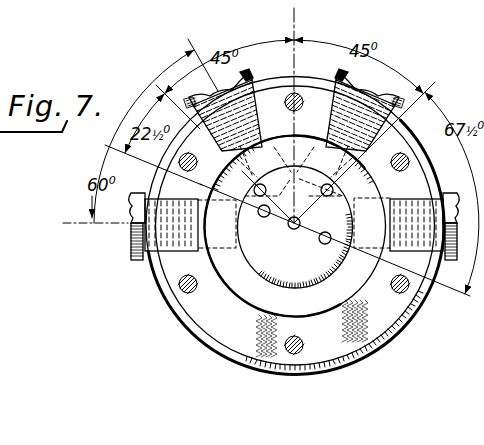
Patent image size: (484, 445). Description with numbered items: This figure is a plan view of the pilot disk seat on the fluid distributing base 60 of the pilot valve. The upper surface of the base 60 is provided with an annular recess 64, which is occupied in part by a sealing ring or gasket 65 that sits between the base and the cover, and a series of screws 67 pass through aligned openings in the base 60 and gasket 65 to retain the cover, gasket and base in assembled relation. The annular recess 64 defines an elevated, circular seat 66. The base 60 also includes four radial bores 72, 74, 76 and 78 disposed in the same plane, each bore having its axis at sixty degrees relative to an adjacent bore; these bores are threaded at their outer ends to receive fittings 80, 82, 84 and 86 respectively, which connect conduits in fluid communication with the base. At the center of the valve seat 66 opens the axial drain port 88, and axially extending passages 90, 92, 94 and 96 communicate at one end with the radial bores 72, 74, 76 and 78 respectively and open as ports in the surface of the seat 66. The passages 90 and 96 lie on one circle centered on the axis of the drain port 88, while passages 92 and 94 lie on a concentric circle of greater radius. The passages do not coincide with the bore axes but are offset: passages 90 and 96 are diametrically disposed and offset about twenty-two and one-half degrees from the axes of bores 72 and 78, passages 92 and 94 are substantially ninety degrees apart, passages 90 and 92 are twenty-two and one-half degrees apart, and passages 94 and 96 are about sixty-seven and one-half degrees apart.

The base 60 is at (236, 368).
The annular recess 64 is at (238, 301).
The sealing ring or gasket 65 is at (339, 352).
The circular seat 66 is at (298, 280).
The screws 67 is at (193, 294).
The radial bore 72 is at (212, 252).
The radial bore 74 is at (263, 146).
The radial bore 76 is at (322, 134).
The radial bore 78 is at (385, 183).
The fitting 80 is at (129, 239).
The fitting 82 is at (249, 72).
The fitting 84 is at (404, 112).
The fitting 86 is at (449, 192).
The axial drain port 88 is at (290, 230).
The axially extending passage 90 is at (262, 216).
The axially extending passage 92 is at (254, 189).
The axially extending passage 94 is at (333, 190).
The axially extending passage 96 is at (323, 244).